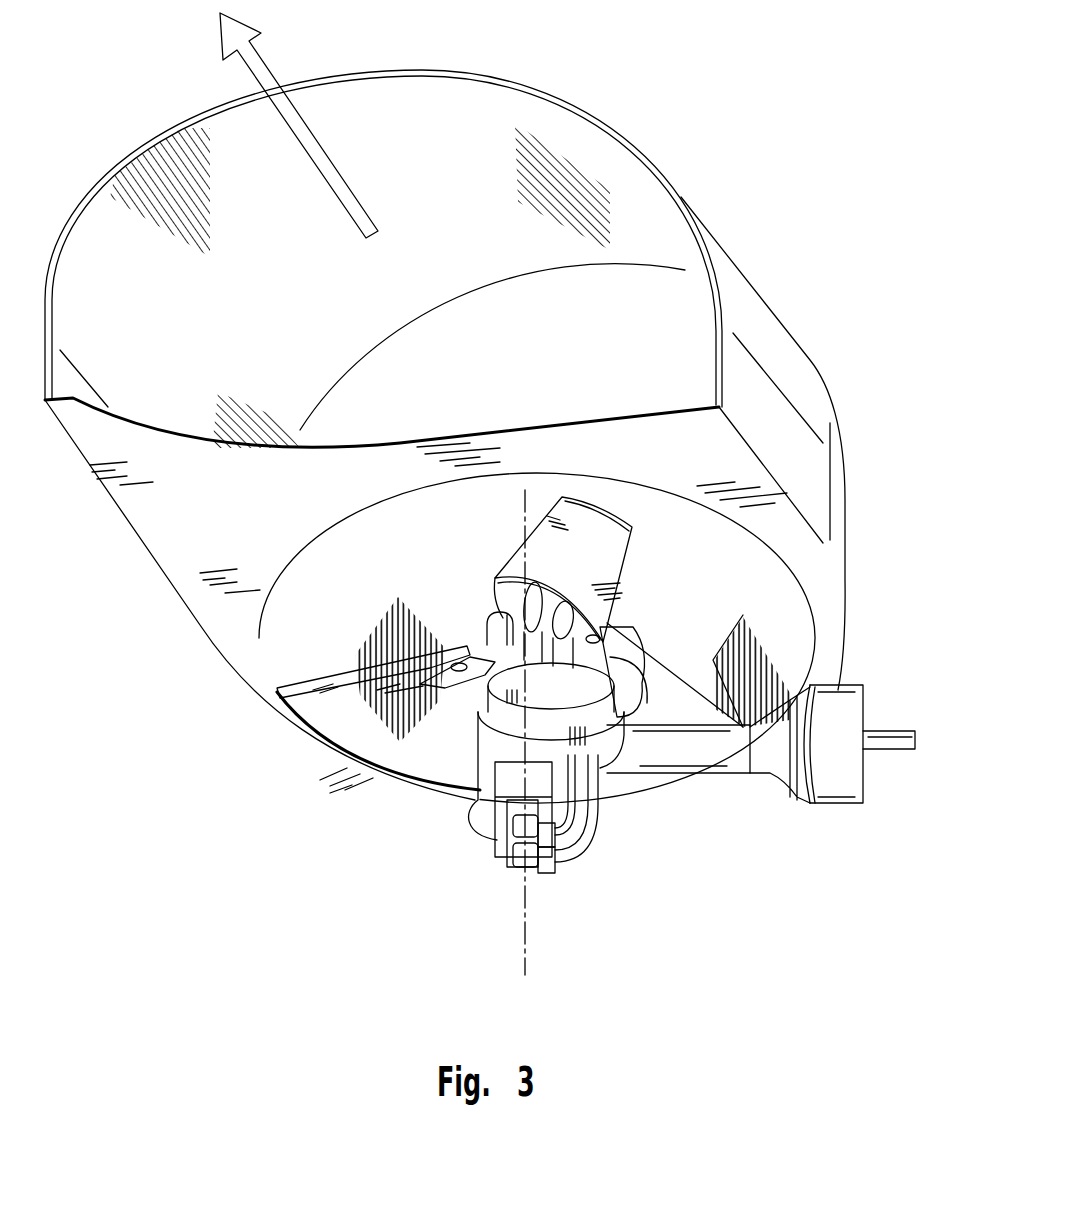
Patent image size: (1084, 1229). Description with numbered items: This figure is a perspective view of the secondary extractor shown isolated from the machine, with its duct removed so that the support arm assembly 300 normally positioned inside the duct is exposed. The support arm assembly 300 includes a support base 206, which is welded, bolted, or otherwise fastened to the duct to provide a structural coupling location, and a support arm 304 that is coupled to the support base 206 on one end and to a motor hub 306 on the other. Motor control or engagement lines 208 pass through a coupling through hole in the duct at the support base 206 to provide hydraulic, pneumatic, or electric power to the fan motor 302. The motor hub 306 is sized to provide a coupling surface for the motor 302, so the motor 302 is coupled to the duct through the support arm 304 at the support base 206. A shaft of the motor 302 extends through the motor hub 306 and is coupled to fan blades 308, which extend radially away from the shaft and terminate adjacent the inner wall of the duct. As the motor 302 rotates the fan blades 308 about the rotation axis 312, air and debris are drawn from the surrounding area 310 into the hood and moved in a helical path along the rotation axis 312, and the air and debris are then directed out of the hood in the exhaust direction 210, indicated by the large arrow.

The support base 206 is at (833, 803).
The motor control or engagement lines 208 is at (897, 730).
The exhaust direction 210 is at (325, 153).
The support arm assembly 300 is at (547, 768).
The fan motor 302 is at (470, 778).
The support arm 304 is at (700, 773).
The motor hub 306 is at (468, 728).
The fan blades 308 is at (613, 562).
The surrounding area 310 is at (458, 815).
The rotation axis 312 is at (525, 965).